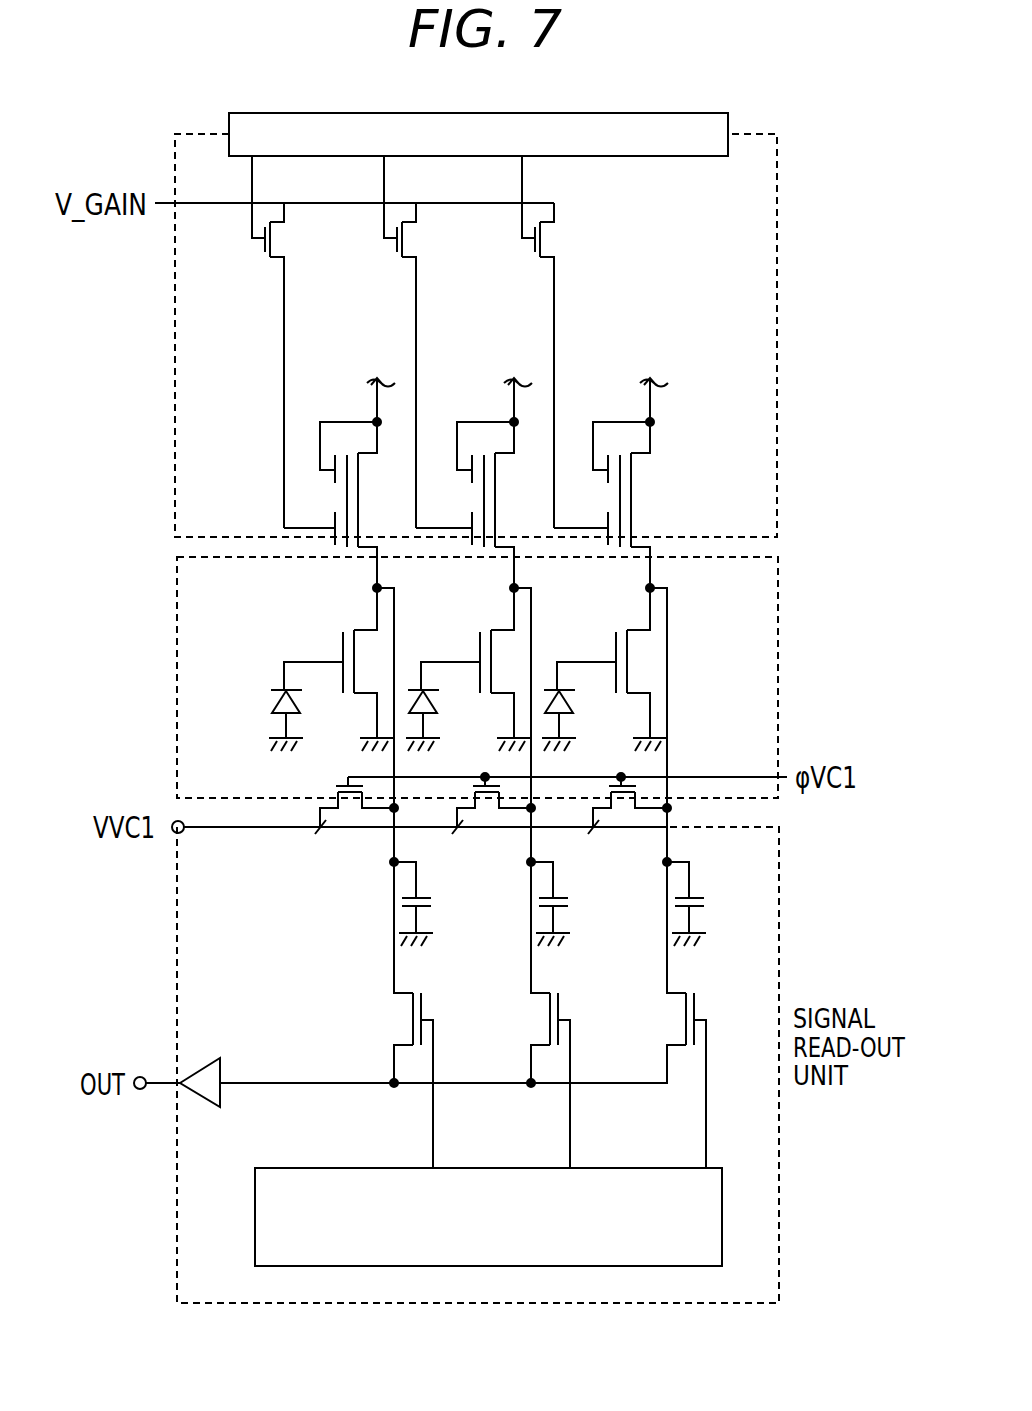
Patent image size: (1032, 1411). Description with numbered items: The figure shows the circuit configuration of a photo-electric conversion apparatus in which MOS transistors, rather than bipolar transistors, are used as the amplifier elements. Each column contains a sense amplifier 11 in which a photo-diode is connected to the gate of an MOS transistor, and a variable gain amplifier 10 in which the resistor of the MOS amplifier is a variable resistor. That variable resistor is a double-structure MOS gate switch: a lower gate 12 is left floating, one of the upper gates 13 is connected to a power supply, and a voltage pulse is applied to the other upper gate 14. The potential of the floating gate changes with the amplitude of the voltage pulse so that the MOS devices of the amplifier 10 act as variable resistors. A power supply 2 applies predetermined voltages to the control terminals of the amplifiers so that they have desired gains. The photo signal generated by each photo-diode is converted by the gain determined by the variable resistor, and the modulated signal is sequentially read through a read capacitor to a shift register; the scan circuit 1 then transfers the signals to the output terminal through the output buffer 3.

The scan circuit 1 is at (715, 1222).
The power supply 2 is at (728, 124).
The output buffer 3 is at (209, 1087).
The variable gain amplifier 10 is at (750, 460).
The sense amplifier 11 is at (750, 718).
The lower gate 12 is at (620, 455).
The upper gate 13 is at (597, 418).
The upper gate 14 is at (585, 528).